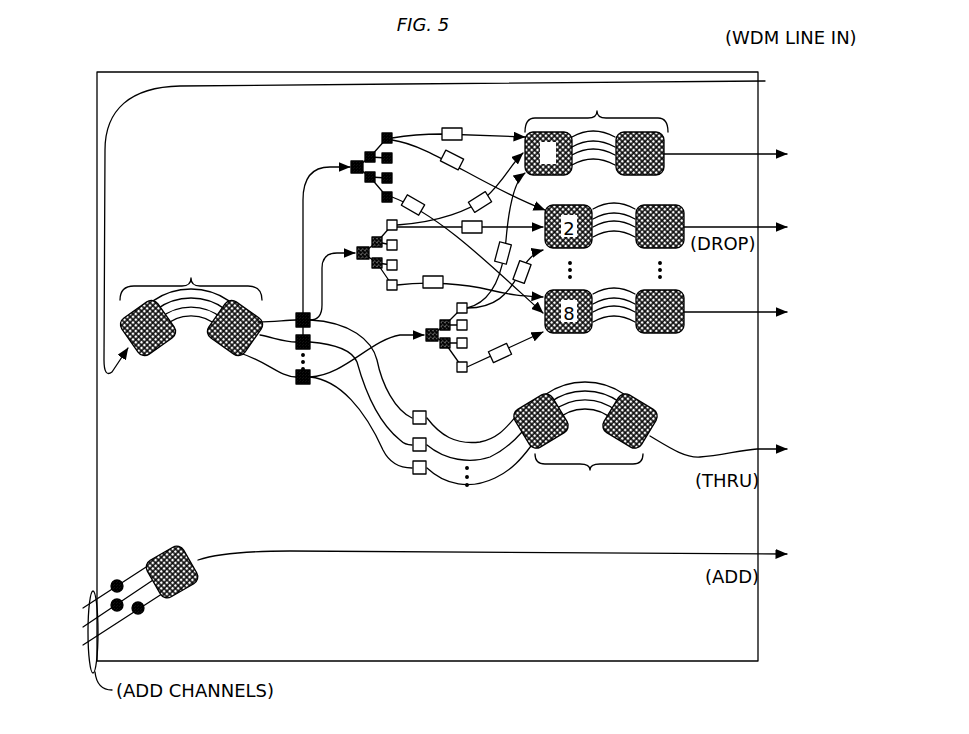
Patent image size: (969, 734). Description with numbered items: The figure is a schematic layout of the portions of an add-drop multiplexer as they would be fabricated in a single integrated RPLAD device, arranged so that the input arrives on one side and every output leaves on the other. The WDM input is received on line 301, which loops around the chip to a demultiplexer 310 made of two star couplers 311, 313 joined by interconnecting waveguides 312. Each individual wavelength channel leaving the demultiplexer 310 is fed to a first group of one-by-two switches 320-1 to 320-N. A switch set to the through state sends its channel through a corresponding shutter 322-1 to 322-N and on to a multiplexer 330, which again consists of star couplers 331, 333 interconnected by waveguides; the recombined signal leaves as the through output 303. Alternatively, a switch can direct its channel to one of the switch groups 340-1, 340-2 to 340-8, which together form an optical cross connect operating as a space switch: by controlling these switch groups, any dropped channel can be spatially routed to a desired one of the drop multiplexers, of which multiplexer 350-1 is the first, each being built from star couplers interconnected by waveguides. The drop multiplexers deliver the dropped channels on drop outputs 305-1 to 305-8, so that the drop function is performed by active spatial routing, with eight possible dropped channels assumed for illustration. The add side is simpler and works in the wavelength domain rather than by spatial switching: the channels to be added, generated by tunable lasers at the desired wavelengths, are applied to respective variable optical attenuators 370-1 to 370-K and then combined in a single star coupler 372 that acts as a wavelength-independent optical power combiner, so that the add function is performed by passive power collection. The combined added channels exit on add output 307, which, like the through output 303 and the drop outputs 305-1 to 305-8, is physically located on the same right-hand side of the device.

The line 301 is at (772, 80).
The through output 303 is at (780, 448).
The drop output 305-1 is at (775, 152).
The drop output 305-8 is at (775, 310).
The add output 307 is at (780, 553).
The demultiplexer 310 is at (191, 328).
The star coupler 311 is at (143, 356).
The demultiplexer fiber array 312 is at (190, 330).
The star coupler 313 is at (235, 355).
The 1×2 switch 320-1 is at (298, 312).
The 1×2 switch 320-N is at (303, 385).
The shutter 322-1 is at (430, 417).
The shutter 322-N is at (412, 470).
The multiplexer 330 is at (599, 426).
The star coupler 331 is at (527, 398).
The star coupler 333 is at (645, 402).
The switch group 340-1 is at (352, 152).
The switch group 340-2 is at (363, 262).
The switch group 340-8 is at (432, 342).
The multiplexer 350-1 is at (596, 132).
The VOA 370-1 is at (117, 580).
The VOA 370-K is at (144, 614).
The star coupler 372 is at (188, 590).